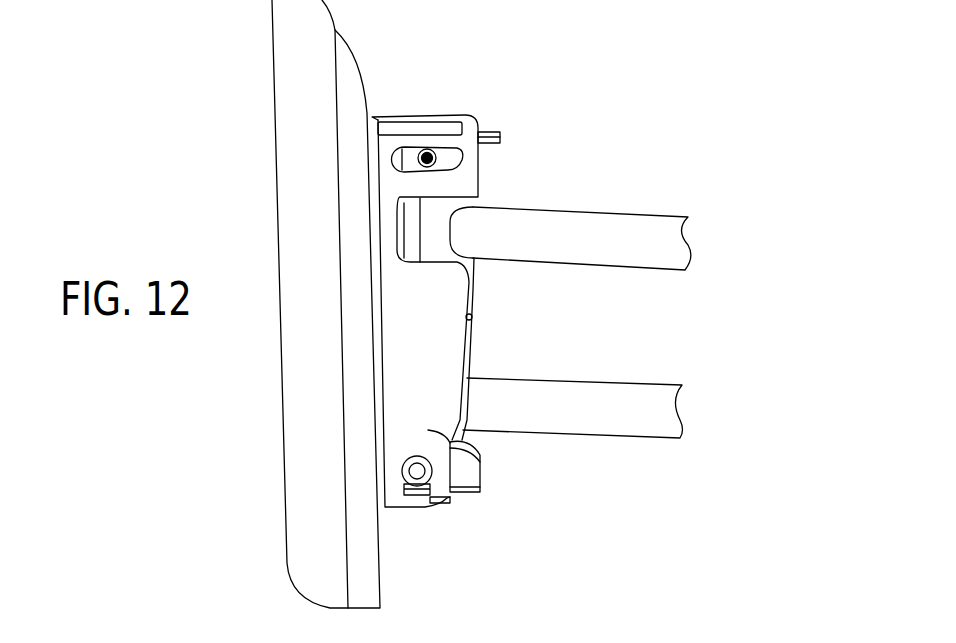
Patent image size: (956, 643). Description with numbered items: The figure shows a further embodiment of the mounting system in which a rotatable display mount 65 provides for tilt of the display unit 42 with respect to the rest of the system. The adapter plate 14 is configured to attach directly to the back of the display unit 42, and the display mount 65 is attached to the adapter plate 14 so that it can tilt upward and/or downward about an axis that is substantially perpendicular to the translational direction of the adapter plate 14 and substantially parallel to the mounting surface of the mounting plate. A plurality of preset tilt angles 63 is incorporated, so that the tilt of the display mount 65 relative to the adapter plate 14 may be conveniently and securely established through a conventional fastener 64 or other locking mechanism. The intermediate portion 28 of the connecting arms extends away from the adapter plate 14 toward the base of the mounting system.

The display unit 42 is at (293, 350).
The adapter plate 14 is at (465, 480).
The preset tilt angles 63 is at (460, 170).
The conventional fastener 64 is at (457, 149).
The display mount 65 is at (480, 457).
The intermediate portion 28 is at (600, 255).